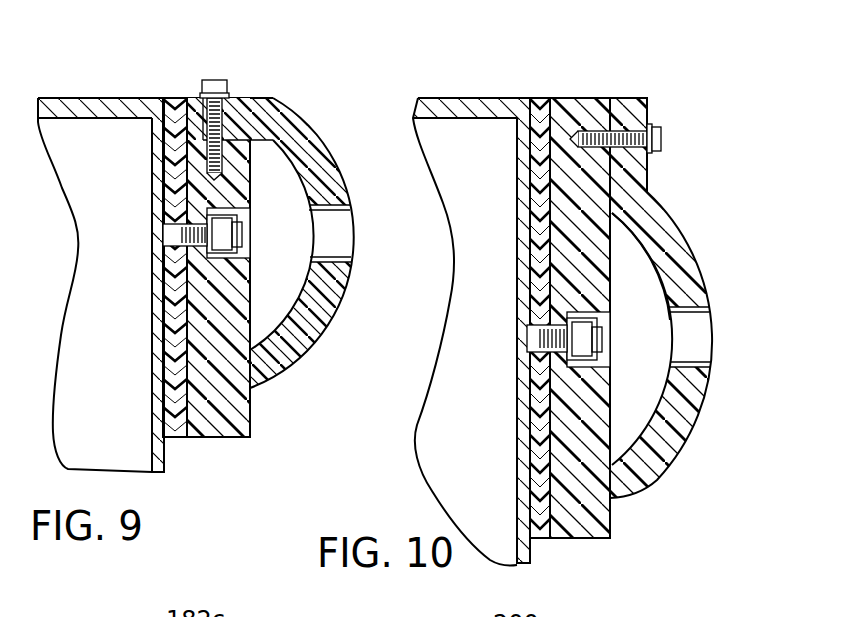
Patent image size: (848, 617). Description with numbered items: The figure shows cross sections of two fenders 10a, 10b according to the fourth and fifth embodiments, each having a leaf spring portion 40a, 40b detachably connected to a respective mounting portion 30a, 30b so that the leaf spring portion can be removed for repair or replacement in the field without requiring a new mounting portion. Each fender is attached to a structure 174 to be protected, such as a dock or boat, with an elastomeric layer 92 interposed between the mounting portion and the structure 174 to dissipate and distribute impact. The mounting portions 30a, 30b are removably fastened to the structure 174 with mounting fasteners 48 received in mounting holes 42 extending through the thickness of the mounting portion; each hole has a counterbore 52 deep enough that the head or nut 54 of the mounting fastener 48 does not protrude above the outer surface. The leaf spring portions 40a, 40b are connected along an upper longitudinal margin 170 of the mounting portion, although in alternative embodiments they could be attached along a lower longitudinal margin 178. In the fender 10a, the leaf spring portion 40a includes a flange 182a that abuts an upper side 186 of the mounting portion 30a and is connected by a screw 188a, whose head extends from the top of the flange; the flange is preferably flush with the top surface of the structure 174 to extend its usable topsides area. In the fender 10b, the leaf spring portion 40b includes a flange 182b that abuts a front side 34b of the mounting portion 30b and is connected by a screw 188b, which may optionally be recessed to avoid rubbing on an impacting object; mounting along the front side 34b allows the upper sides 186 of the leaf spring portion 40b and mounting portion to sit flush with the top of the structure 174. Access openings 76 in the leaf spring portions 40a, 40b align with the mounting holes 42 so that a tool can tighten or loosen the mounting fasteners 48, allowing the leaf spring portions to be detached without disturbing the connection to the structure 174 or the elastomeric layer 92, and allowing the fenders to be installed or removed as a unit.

In FIG. 9, the fender 10a is at (347, 97).
In FIG. 10, the fender 10b is at (706, 103).
In FIG. 9, the structure 174 is at (112, 108).
In FIG. 10, the structure 174 is at (477, 107).
In FIG. 9, the elastomeric layer 92 is at (177, 440).
In FIG. 10, the elastomeric layer 92 is at (540, 540).
In FIG. 9, the upper side 186 is at (196, 130).
In FIG. 10, the upper side 186 is at (565, 94).
In FIG. 9, the upper longitudinal margin 170 is at (255, 152).
In FIG. 10, the upper longitudinal margin 170 is at (593, 92).
In FIG. 9, the flange 182a is at (247, 110).
In FIG. 10, the flange 182b is at (636, 112).
In FIG. 9, the screw 188a is at (213, 79).
In FIG. 10, the screw 188b is at (662, 143).
In FIG. 9, the leaf spring portion 40a is at (334, 243).
In FIG. 10, the leaf spring portion 40b is at (688, 345).
In FIG. 9, the access openings 76 is at (337, 232).
In FIG. 10, the access openings 76 is at (697, 338).
In FIG. 9, the mounting portion 30a is at (303, 287).
In FIG. 10, the mounting portion 30b is at (658, 312).
In FIG. 9, the lower longitudinal margin 178 is at (228, 441).
In FIG. 10, the lower longitudinal margin 178 is at (587, 543).
In FIG. 9, the mounting fastener 48 is at (172, 233).
In FIG. 10, the mounting fastener 48 is at (527, 338).
In FIG. 9, the mounting holes 42 is at (197, 243).
In FIG. 10, the mounting holes 42 is at (550, 344).
In FIG. 9, the head or nut 54 is at (227, 232).
In FIG. 10, the head or nut 54 is at (588, 312).
In FIG. 9, the counterbore 52 is at (250, 256).
In FIG. 10, the counterbore 52 is at (609, 352).
In FIG. 10, the front side 34b is at (615, 262).